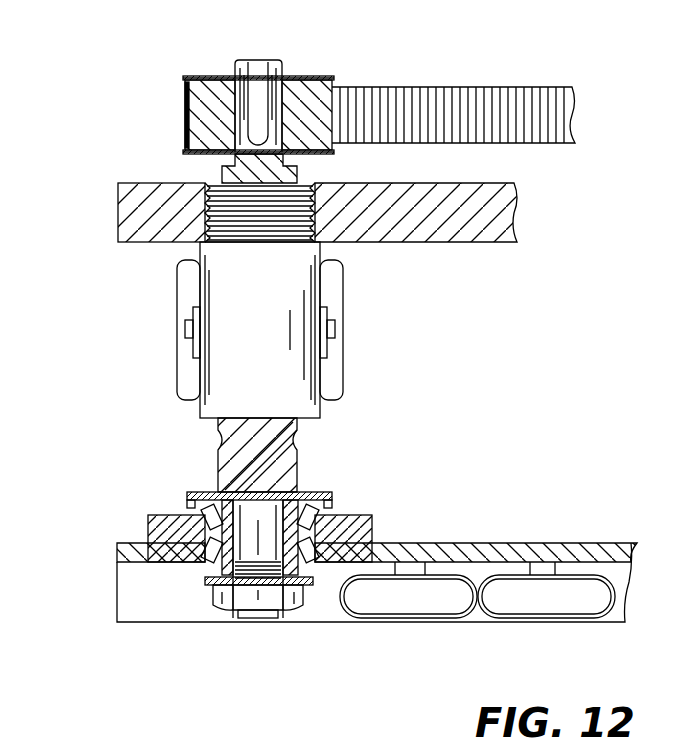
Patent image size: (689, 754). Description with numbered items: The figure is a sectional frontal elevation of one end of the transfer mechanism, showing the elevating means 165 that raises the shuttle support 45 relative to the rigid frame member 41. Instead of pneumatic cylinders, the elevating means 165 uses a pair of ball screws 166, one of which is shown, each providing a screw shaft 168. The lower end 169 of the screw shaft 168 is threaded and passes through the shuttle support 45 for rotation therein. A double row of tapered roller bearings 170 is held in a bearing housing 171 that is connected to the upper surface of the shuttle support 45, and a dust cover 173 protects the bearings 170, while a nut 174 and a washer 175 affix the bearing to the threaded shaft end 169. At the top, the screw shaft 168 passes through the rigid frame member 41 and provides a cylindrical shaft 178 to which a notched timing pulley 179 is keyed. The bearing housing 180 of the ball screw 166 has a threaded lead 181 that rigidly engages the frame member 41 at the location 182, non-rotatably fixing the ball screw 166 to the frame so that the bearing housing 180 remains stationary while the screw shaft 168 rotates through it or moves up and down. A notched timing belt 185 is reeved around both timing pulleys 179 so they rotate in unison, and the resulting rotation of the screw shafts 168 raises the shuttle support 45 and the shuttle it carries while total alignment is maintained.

The elevating means 165 is at (152, 117).
The cylindrical shaft 178 is at (283, 62).
The notched timing pulley 179 is at (333, 78).
The notched timing belt 185 is at (549, 100).
The rigid frame member 41 is at (503, 213).
The threaded lead 181 is at (205, 212).
The engagement of threaded lead with frame 182 is at (205, 243).
The bearing housing 180 is at (200, 405).
The ball screw 166 is at (348, 303).
The screw shaft 168 is at (297, 432).
The tapered roller bearings 170 is at (334, 495).
The dust cover 173 is at (313, 497).
The bearing housing 171 is at (358, 516).
The shuttle support 45 is at (505, 547).
The lower end of screw shaft 169 is at (277, 620).
The washer 175 is at (210, 580).
The nut 174 is at (215, 600).